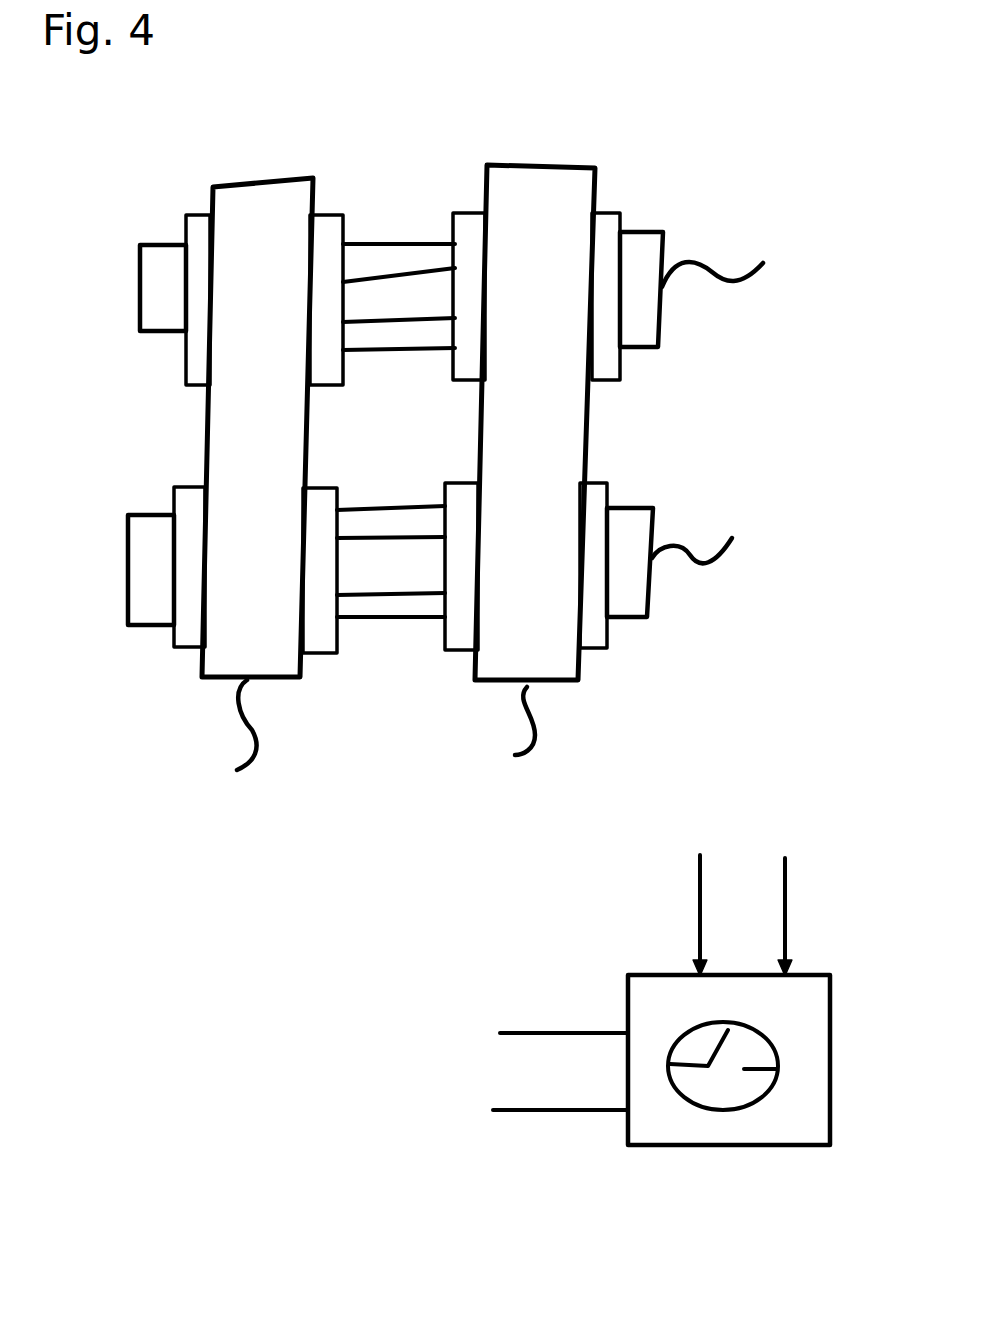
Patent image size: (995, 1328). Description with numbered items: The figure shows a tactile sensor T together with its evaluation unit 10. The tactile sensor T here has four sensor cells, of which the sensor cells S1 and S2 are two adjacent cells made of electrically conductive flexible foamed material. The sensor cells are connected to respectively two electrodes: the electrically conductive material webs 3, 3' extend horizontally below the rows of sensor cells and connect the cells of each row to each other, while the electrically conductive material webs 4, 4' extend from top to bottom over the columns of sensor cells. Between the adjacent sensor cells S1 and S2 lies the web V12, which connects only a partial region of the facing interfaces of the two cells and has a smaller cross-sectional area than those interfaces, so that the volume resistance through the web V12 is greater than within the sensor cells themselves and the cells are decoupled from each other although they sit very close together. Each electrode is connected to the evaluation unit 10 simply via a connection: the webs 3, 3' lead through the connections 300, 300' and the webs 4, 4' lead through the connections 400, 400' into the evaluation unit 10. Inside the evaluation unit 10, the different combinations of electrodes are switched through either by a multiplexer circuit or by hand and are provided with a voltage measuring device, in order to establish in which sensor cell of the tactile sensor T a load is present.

The electrically conductive material web 4 is at (264, 377).
The electrically conductive material web 4' is at (538, 376).
The electrically conductive material web 3 is at (119, 304).
The electrically conductive material web 3' is at (103, 578).
The sensor cell S1 is at (335, 213).
The sensor cell S2 is at (610, 212).
The web V12 is at (403, 273).
The connection 300 is at (709, 601).
The connection 300' is at (717, 739).
The connection 400 is at (400, 904).
The connection 400' is at (526, 867).
The tactile sensor T is at (752, 197).
The evaluation unit 10 is at (722, 1148).